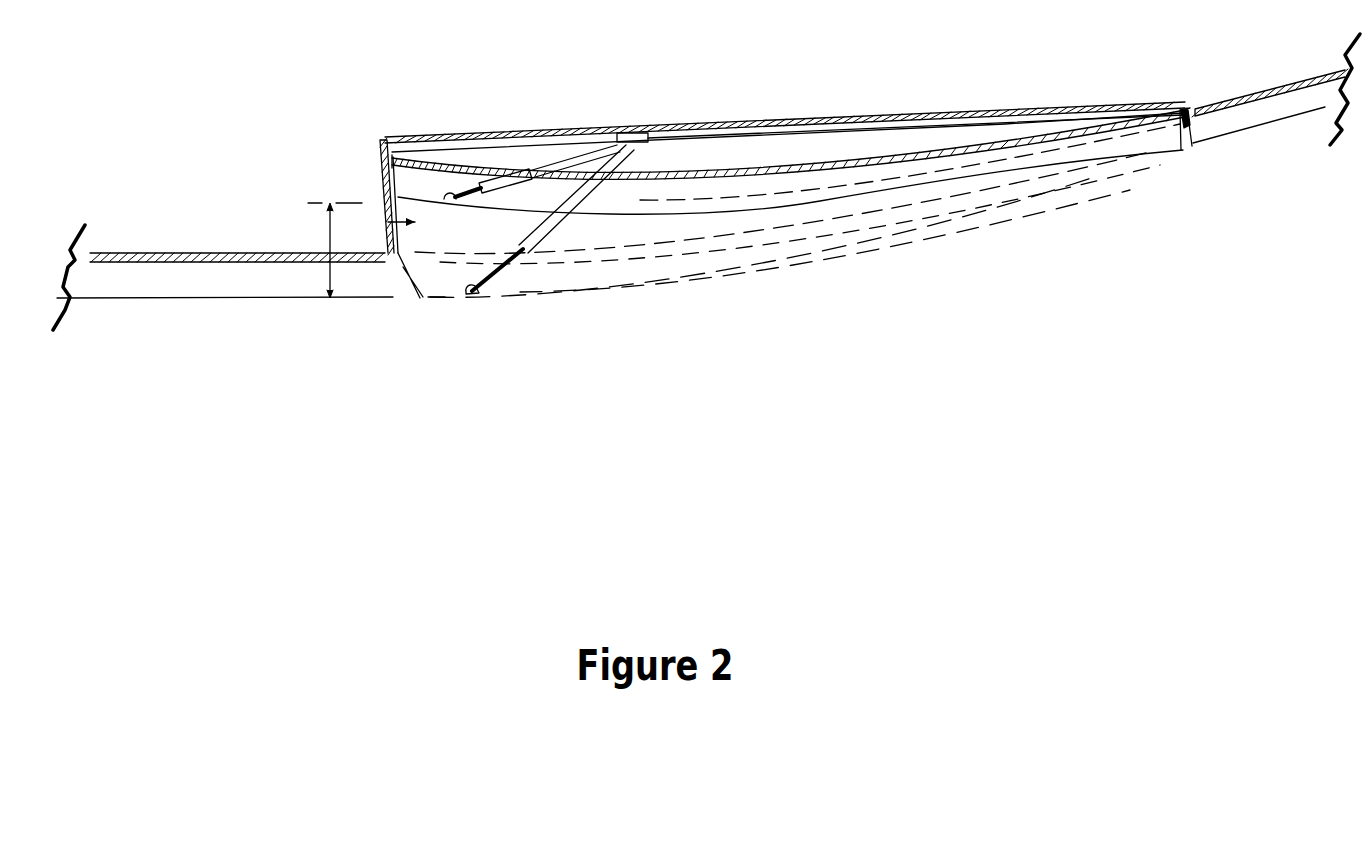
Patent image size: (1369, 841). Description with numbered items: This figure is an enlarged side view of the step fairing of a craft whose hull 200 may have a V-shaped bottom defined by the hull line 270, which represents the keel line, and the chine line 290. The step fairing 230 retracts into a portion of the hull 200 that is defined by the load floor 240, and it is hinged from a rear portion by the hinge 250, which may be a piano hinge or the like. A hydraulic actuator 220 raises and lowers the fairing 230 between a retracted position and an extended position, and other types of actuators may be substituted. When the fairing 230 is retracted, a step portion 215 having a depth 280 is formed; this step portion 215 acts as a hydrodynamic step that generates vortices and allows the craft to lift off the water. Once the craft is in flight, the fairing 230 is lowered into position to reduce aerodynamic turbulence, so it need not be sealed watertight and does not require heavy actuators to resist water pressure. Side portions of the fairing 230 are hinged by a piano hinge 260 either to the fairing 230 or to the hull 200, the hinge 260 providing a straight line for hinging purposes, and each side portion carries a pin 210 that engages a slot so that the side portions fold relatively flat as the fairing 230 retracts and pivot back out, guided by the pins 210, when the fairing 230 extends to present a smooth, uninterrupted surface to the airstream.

The hull 200 is at (1268, 107).
The pin 210 is at (383, 207).
The step portion 215 is at (415, 235).
The hydraulic actuator 220 is at (568, 168).
The step fairing 230 is at (693, 167).
The load floor 240 is at (895, 113).
The hinge 250 is at (1188, 100).
The piano hinge 260 is at (869, 138).
The hull line 270 is at (613, 299).
The depth 280 is at (333, 250).
The chine line 290 is at (213, 268).